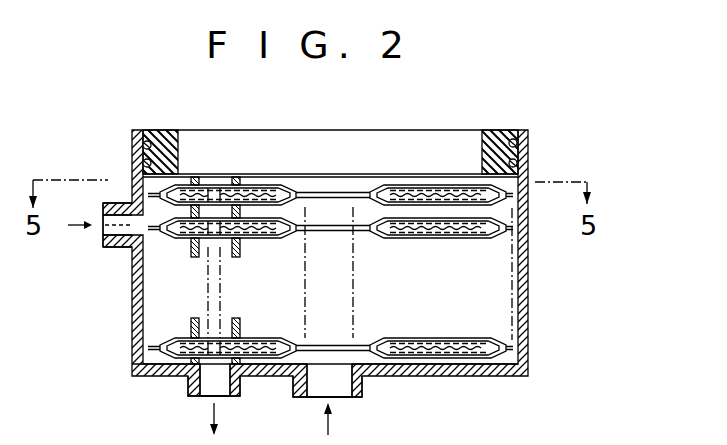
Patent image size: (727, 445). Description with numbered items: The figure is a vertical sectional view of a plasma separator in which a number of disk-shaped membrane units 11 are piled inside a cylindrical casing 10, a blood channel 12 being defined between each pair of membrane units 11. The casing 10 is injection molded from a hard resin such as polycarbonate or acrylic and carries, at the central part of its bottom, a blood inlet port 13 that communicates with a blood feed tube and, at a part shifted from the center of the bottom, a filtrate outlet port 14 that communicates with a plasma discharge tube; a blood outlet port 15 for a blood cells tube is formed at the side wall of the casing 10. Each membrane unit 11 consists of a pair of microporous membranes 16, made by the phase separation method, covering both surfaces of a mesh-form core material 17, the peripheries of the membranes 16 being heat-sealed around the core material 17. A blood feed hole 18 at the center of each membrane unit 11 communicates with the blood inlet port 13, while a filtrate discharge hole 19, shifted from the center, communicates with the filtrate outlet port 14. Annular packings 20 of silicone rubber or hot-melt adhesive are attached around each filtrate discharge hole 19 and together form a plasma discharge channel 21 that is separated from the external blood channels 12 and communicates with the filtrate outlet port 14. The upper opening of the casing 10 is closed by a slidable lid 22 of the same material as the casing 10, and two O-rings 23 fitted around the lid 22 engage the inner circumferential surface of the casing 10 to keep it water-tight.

The casing 10 is at (528, 272).
The membrane unit 11 is at (438, 184).
The blood channel 12 is at (483, 215).
The blood inlet port 13 is at (340, 387).
The filtrate outlet port 14 is at (222, 388).
The blood outlet port 15 is at (105, 232).
The microporous membrane 16 is at (408, 185).
The core material 17 is at (383, 185).
The blood feed hole 18 is at (346, 198).
The filtrate discharge hole 19 is at (211, 187).
The annular packing 20 is at (252, 208).
The plasma discharge channel 21 is at (218, 280).
The lid 22 is at (328, 140).
The O-ring 23 is at (521, 162).